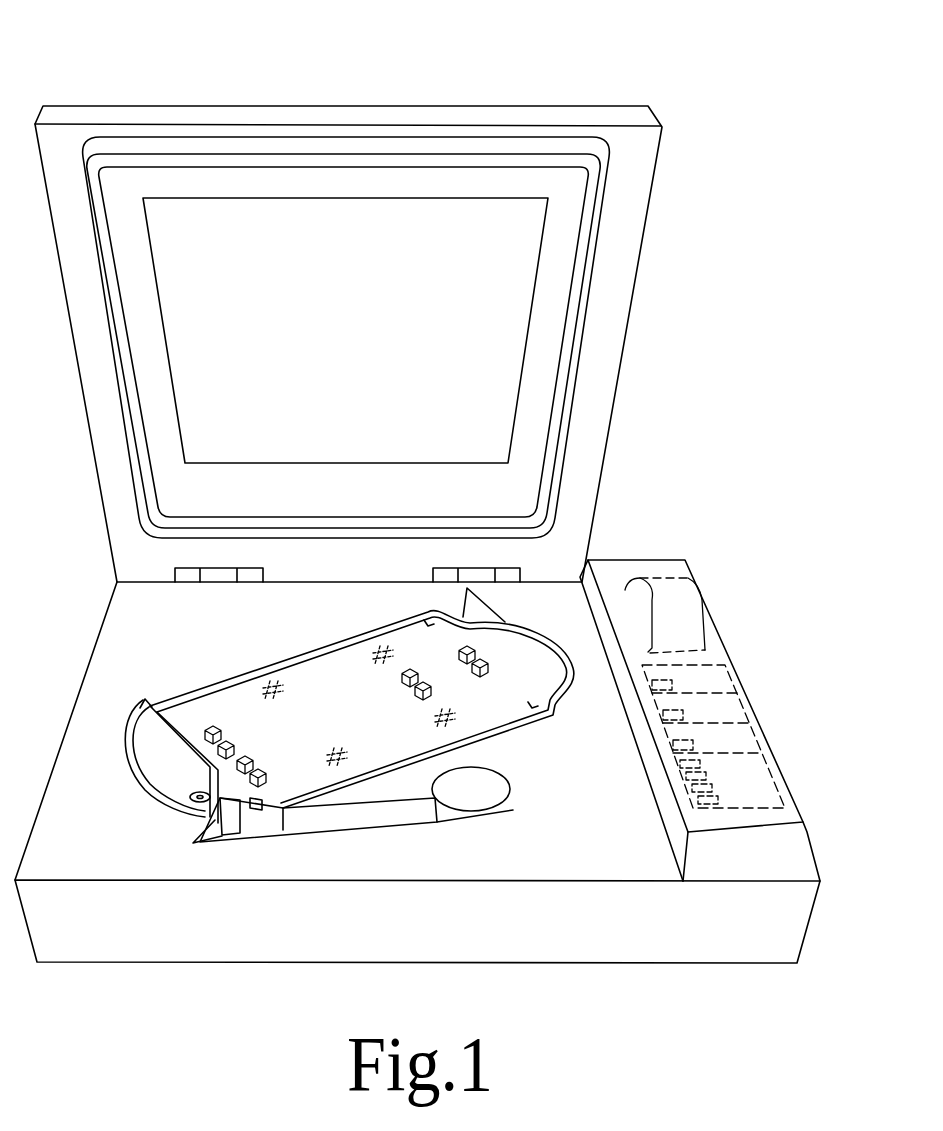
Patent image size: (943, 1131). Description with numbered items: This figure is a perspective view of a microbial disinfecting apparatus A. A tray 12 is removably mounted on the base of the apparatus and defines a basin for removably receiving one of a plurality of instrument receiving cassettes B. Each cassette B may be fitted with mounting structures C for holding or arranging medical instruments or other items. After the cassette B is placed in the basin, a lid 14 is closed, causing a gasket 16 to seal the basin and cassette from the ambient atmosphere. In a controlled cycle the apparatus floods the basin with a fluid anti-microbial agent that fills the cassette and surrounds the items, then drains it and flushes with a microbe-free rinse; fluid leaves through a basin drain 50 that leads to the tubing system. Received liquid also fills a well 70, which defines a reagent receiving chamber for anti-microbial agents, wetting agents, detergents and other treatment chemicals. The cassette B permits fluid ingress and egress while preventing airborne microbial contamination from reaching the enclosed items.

The microbial disinfecting apparatus A is at (698, 400).
The tray 12 is at (553, 603).
The lid 14 is at (520, 105).
The gasket 16 is at (592, 290).
The basin drain 50 is at (220, 837).
The well 70 is at (483, 797).
The instrument receiving cassette B is at (372, 718).
The mounting structures C is at (387, 680).